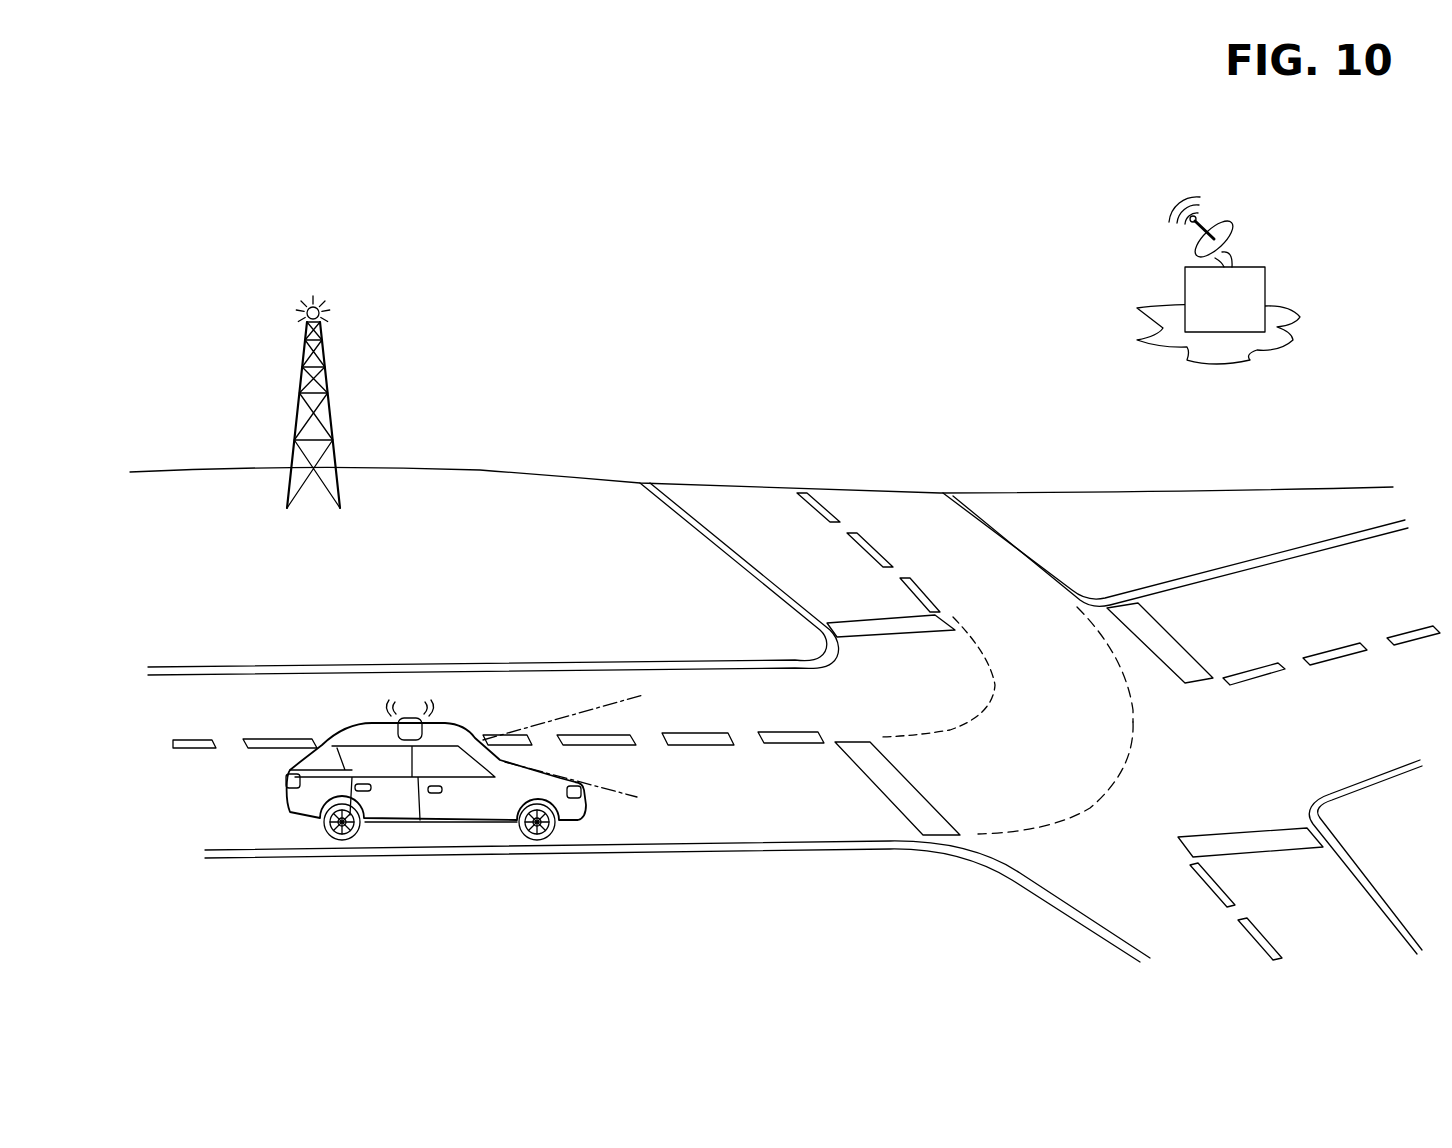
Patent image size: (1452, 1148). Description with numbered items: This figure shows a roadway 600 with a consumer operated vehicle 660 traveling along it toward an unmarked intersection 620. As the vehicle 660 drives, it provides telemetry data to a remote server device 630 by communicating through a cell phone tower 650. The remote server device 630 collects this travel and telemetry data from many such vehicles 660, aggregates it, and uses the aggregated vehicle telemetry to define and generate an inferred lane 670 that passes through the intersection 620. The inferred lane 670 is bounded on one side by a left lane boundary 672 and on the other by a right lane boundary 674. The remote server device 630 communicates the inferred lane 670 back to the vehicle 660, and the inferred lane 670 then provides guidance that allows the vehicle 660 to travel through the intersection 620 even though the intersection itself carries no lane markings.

The roadway 600 is at (800, 807).
The intersection 620 is at (1142, 670).
The remote server device 630 is at (1265, 293).
The cell phone tower 650 is at (297, 373).
The consumer operated vehicle 660 is at (437, 805).
The inferred lane 670 is at (1035, 677).
The left lane boundary 672 is at (914, 730).
The right lane boundary 674 is at (1060, 817).